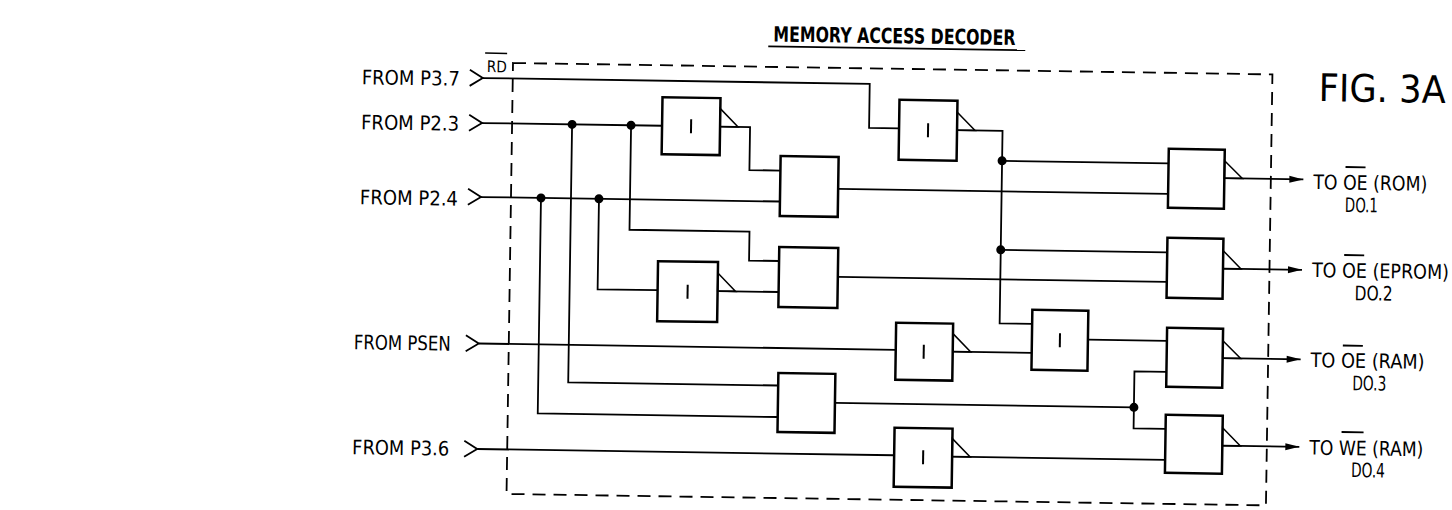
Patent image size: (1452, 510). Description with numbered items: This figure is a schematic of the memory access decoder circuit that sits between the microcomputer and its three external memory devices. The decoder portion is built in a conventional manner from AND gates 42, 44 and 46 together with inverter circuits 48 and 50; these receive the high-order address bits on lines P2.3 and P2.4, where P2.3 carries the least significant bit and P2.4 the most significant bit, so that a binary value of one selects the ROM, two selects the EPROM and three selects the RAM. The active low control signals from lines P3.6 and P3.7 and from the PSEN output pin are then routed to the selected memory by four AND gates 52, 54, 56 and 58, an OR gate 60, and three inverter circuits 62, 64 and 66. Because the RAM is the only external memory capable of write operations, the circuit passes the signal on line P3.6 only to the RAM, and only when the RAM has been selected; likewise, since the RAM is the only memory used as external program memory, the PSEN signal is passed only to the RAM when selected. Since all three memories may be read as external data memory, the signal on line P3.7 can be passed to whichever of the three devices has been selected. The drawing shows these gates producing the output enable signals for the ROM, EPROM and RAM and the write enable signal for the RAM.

The AND gate 42 is at (798, 161).
The AND gate 44 is at (829, 253).
The AND gate 46 is at (828, 385).
The inverter circuit 48 is at (709, 108).
The inverter circuit 50 is at (671, 305).
The AND gate 52 is at (1193, 143).
The AND gate 54 is at (1175, 233).
The AND gate 56 is at (1179, 325).
The AND gate 58 is at (1179, 456).
The OR gate 60 is at (1055, 357).
The inverter circuit 62 is at (909, 467).
The inverter circuit 64 is at (922, 327).
The inverter circuit 66 is at (948, 106).